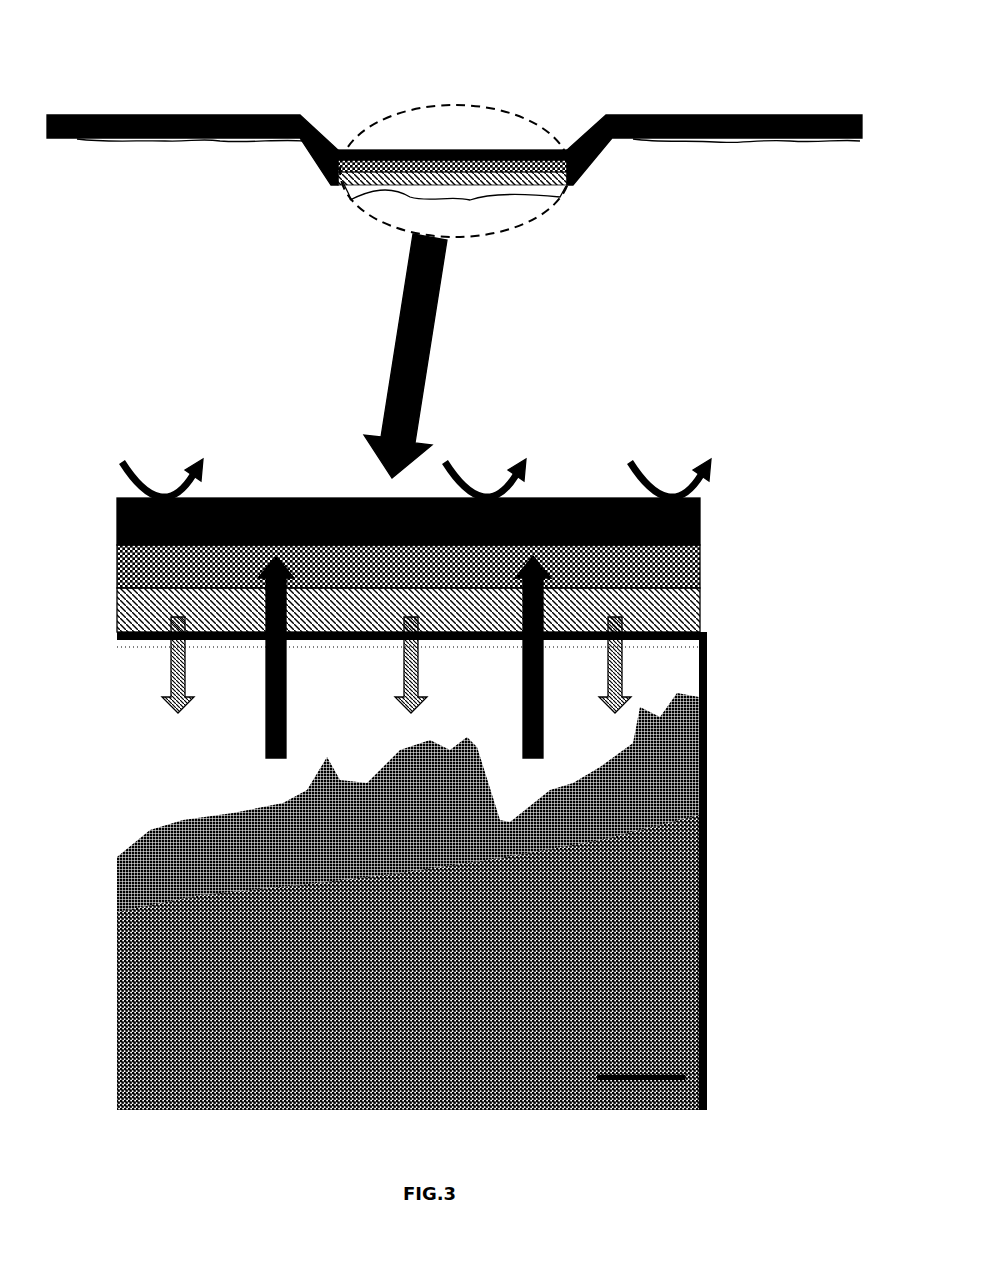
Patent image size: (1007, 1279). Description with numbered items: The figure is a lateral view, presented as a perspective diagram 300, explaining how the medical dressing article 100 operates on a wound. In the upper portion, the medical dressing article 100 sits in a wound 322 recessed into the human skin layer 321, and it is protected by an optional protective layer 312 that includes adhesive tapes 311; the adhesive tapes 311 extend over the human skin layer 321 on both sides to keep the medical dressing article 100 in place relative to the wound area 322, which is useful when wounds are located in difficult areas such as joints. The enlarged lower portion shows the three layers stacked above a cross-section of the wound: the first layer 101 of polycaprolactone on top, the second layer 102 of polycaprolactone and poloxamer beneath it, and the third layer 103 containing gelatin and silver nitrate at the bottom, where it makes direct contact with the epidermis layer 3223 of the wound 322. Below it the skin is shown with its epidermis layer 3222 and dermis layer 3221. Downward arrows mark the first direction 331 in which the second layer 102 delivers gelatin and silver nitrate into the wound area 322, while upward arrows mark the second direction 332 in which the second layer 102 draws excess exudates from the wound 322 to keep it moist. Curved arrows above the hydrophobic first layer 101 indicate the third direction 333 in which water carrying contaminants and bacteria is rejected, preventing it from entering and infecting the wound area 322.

The perspective diagram 300 is at (463, 72).
The adhesive tapes 311 is at (727, 68).
The protective layer 312 is at (400, 150).
The medical dressing article 100 is at (340, 176).
The human skin layer 321 is at (203, 141).
The wound area 322 is at (428, 655).
The first layer 101 is at (700, 517).
The second layer 102 is at (700, 568).
The third layer 103 is at (700, 602).
The first direction 331 is at (171, 668).
The second direction 332 is at (265, 720).
The third direction 333 is at (132, 465).
The dermis layer 3221 is at (147, 1002).
The epidermis layer 3222 is at (147, 883).
The epidermis layer 3223 is at (165, 748).